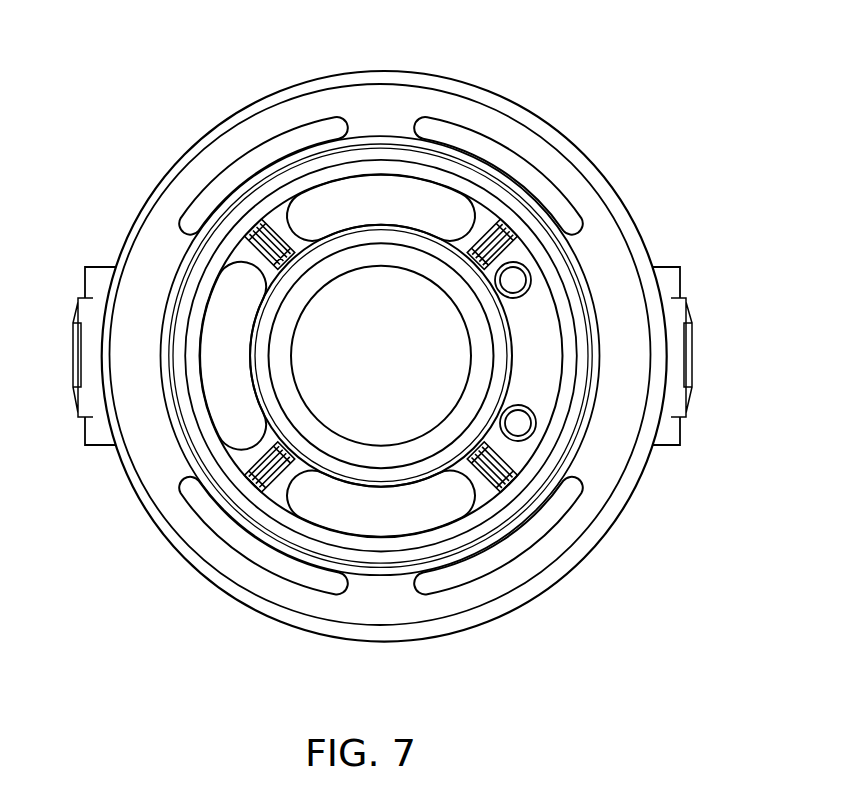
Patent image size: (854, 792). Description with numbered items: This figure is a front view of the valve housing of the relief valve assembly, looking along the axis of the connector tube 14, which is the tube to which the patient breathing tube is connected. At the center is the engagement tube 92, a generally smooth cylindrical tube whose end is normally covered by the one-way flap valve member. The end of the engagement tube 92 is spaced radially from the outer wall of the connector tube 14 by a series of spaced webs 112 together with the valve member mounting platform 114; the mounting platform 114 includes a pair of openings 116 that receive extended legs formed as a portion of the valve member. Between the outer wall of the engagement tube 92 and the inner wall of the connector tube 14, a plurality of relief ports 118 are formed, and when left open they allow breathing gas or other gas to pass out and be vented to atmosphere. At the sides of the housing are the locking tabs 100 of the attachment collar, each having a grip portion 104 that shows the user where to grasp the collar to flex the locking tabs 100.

The connector tube 14 is at (370, 127).
The engagement tube 92 is at (363, 259).
The locking tabs 100 is at (672, 268).
The grip portion 104 is at (693, 342).
The spaced webs 112 is at (255, 270).
The valve member mounting platform 114 is at (527, 310).
The openings 116 is at (516, 279).
The relief ports 118 is at (430, 195).